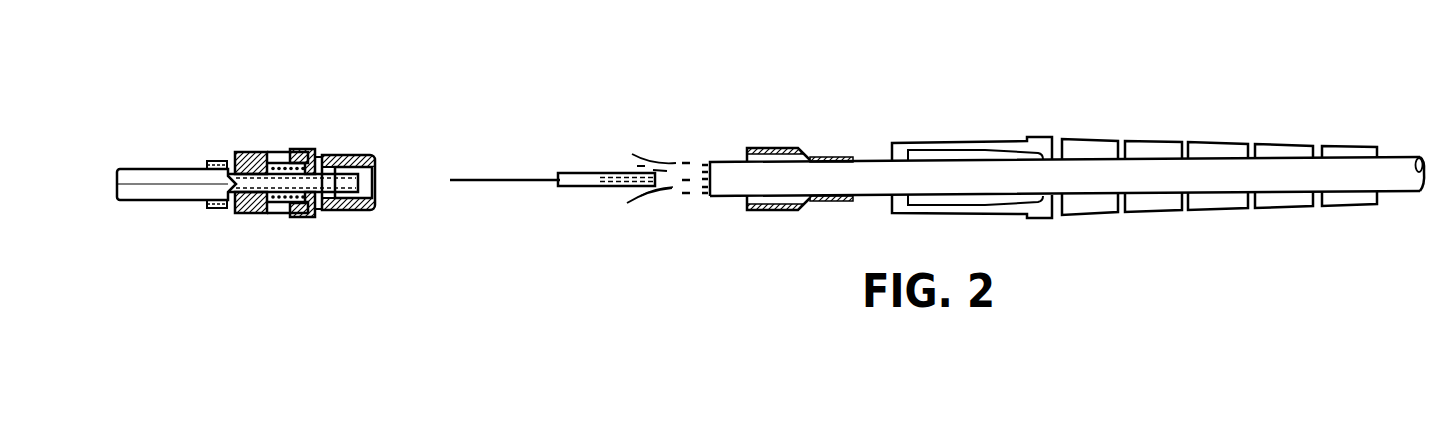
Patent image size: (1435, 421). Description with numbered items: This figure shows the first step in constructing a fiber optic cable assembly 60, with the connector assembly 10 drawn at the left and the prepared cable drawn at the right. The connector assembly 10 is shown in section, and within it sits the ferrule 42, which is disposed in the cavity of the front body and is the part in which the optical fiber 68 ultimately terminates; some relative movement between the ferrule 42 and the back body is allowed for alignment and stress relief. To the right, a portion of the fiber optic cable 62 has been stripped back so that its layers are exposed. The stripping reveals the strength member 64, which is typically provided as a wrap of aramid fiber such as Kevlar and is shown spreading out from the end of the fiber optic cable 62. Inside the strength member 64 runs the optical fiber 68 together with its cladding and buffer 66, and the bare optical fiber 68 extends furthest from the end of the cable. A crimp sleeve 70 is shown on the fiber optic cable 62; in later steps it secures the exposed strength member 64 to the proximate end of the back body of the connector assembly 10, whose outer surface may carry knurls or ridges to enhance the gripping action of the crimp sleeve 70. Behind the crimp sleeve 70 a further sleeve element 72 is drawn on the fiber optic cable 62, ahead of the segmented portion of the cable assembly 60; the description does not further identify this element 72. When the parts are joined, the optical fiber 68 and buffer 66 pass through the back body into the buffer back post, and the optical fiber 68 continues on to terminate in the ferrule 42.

The connector assembly 10 is at (340, 142).
The ferrule 42 is at (172, 170).
The fiber optic cable assembly 60 is at (1163, 115).
The fiber optic cable 62 is at (723, 199).
The strength member 64 is at (650, 156).
The buffer 66 is at (588, 173).
The optical fiber 68 is at (490, 179).
The crimp sleeve 70 is at (802, 150).
The sleeve 72 is at (957, 143).